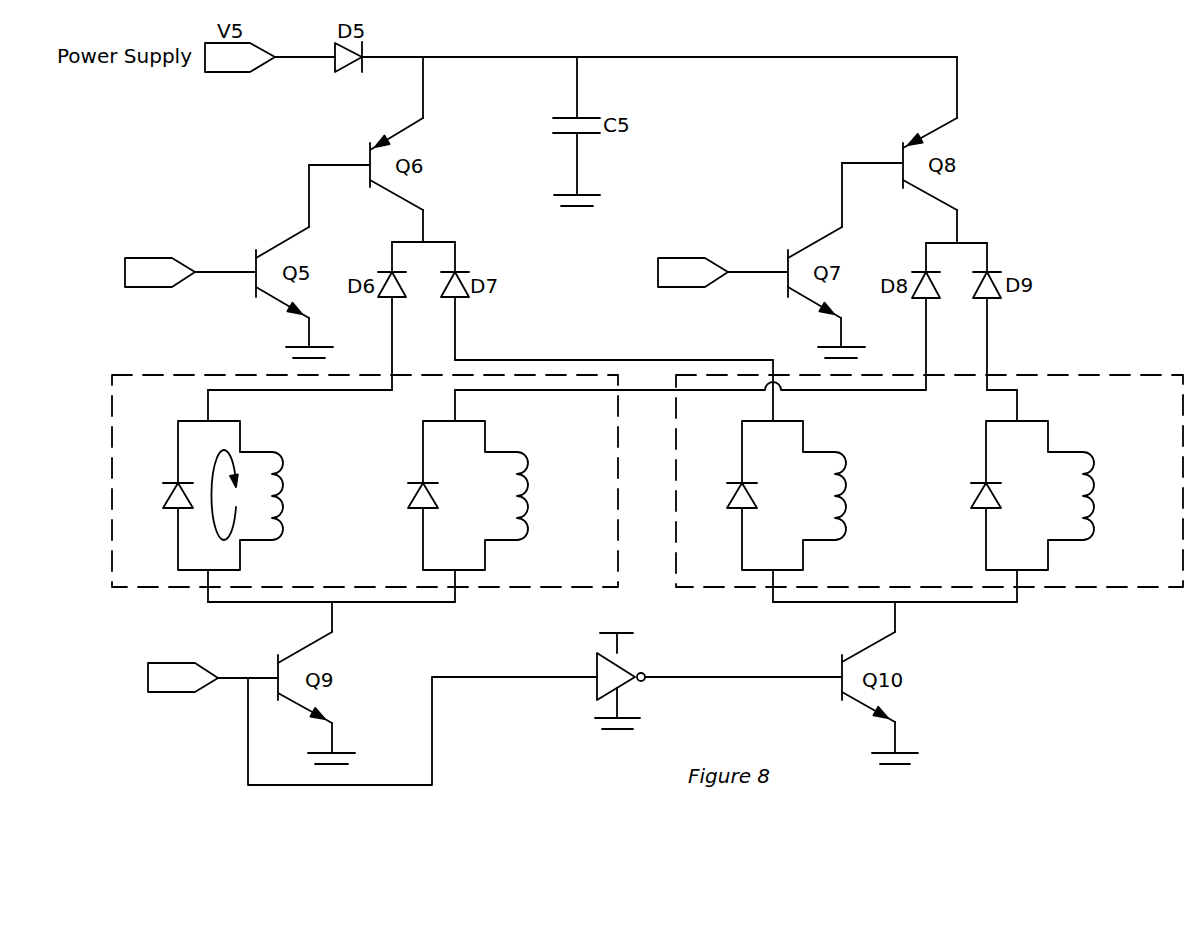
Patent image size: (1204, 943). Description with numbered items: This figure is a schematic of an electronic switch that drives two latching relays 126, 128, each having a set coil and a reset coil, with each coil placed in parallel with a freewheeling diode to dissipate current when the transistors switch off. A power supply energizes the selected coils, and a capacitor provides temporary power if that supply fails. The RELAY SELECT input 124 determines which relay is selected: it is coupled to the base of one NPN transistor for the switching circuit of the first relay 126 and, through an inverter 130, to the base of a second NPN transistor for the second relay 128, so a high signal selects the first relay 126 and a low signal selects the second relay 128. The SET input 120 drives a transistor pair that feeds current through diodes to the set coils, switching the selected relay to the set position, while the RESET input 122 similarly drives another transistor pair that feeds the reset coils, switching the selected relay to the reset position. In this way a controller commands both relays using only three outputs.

The SET input 120 is at (147, 258).
The RESET input 122 is at (680, 258).
The RELAY SELECT input 124 is at (170, 663).
The first latching relay 126 is at (513, 587).
The second latching relay 128 is at (1132, 587).
The inverter 130 is at (597, 690).